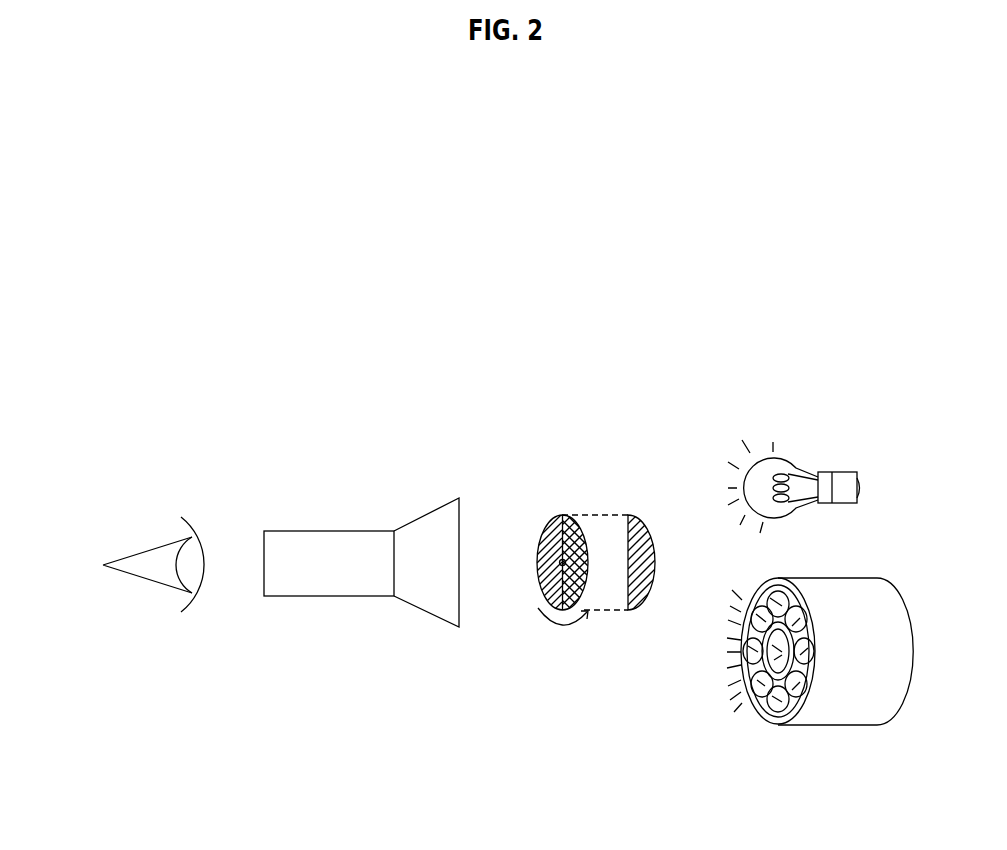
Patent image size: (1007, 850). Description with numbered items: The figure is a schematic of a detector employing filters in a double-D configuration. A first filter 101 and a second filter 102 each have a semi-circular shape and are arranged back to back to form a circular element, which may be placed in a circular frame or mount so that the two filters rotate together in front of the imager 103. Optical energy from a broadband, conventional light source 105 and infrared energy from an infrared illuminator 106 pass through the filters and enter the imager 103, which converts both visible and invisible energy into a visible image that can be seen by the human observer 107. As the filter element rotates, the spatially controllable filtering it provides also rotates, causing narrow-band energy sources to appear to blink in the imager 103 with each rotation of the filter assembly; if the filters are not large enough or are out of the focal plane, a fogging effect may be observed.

The first filter 101 is at (550, 560).
The second filter 102 is at (580, 560).
The imager 103 is at (306, 547).
The broadband light source 105 is at (788, 463).
The infrared illuminator 106 is at (827, 593).
The human observer 107 is at (153, 597).